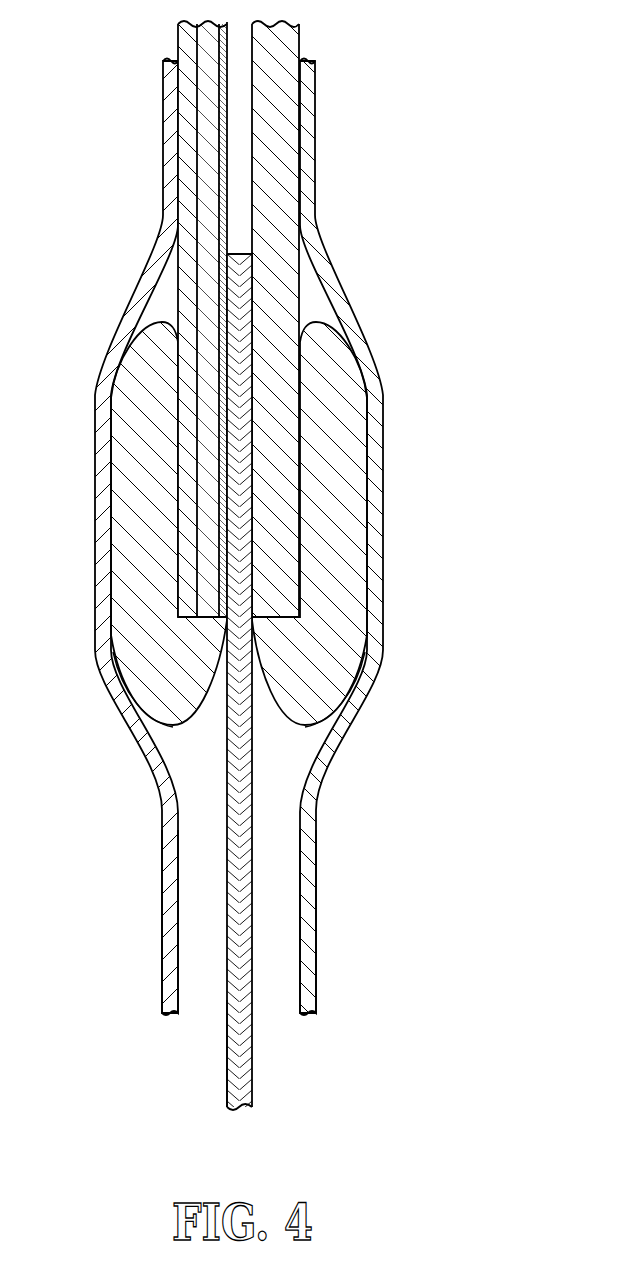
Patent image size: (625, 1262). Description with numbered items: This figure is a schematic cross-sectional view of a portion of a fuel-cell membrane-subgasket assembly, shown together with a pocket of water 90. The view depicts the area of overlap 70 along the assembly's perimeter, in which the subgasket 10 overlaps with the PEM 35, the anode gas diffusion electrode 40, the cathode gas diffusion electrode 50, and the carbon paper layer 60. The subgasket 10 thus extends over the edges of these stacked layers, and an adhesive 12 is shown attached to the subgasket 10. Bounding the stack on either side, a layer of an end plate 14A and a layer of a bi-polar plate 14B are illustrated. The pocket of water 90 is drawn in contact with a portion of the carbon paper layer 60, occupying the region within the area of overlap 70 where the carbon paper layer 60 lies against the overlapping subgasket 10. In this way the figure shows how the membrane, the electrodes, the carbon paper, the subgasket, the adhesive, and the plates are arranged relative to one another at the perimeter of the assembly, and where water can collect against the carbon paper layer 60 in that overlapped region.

The subgasket 10 is at (250, 893).
The adhesive 12 is at (227, 1033).
The layer of an end plate 14A is at (168, 835).
The layer of a bi-polar plate 14B is at (312, 840).
The PEM 35 is at (219, 145).
The anode gas diffusion electrode 40 is at (273, 175).
The cathode gas diffusion electrode 50 is at (208, 272).
The carbon paper layer 60 is at (175, 298).
The area of overlap 70 is at (415, 252).
The pocket of water 90 is at (132, 657).